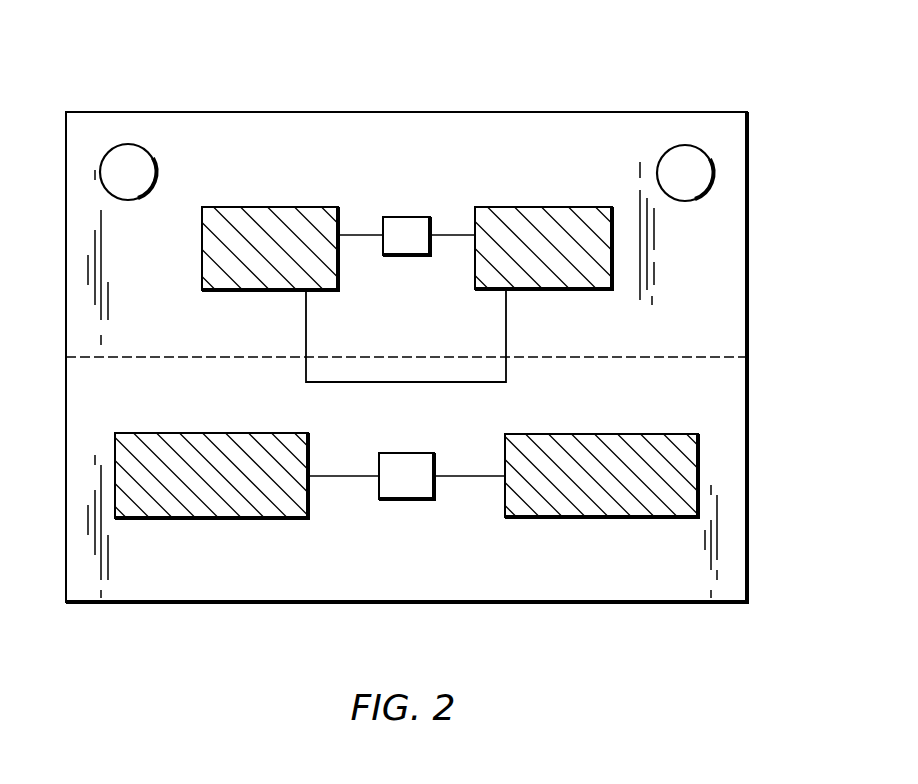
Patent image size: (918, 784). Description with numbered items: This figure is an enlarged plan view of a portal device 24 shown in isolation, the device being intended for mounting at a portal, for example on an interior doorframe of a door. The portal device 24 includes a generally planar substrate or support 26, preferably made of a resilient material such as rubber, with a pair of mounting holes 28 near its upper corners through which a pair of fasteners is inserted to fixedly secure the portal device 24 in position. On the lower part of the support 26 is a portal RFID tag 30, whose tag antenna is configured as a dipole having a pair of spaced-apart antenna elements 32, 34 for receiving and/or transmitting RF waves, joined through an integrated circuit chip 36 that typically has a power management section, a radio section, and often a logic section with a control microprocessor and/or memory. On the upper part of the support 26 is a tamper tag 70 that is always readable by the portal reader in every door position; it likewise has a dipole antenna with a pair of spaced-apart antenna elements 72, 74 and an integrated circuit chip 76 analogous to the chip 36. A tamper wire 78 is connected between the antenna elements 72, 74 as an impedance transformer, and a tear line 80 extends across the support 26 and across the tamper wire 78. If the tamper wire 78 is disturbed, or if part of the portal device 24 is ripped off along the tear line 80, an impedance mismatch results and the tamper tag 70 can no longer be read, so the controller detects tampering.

The portal device 24 is at (764, 58).
The support 26 is at (75, 389).
The mounting holes 28 is at (128, 144).
The portal RFID tag 30 is at (114, 443).
The antenna element 32 is at (211, 518).
The antenna element 34 is at (598, 517).
The integrated circuit chip 36 is at (407, 499).
The tamper tag 70 is at (187, 247).
The antenna element 72 is at (270, 207).
The antenna element 74 is at (544, 207).
The integrated circuit chip 76 is at (407, 217).
The tamper wire 78 is at (306, 335).
The tear line 80 is at (724, 360).